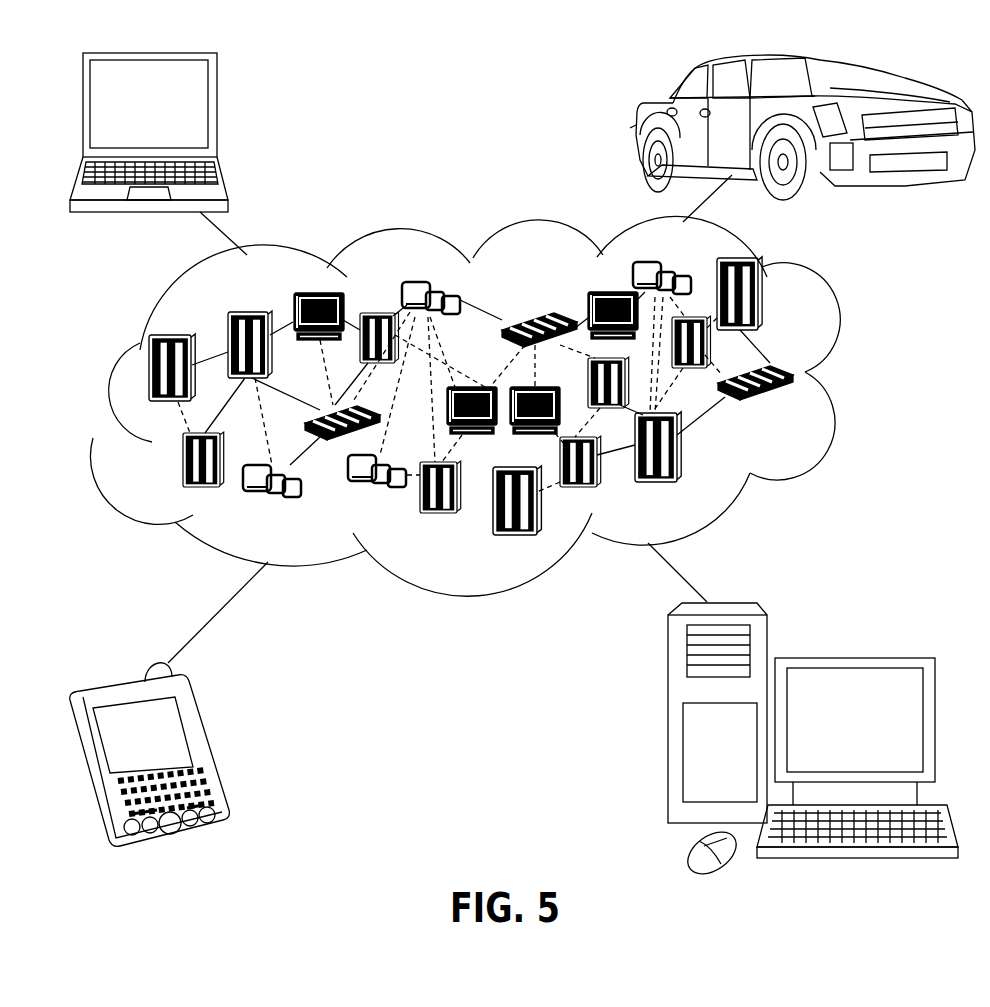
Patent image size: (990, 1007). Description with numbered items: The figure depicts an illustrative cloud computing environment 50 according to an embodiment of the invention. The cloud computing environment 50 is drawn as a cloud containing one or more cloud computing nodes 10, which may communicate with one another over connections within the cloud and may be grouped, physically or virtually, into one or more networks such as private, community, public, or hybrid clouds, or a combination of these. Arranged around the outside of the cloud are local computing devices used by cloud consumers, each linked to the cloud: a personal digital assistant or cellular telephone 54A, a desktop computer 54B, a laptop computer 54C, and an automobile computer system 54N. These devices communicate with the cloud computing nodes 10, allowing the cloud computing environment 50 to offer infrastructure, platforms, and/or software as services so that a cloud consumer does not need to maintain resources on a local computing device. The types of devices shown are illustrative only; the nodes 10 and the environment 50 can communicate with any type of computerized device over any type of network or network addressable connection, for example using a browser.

The cloud computing node 10 is at (797, 407).
The cloud computing environment 50 is at (499, 406).
The personal digital assistant or cellular telephone 54A is at (208, 748).
The desktop computer 54B is at (850, 656).
The laptop computer 54C is at (217, 110).
The automobile computer system 54N is at (645, 128).